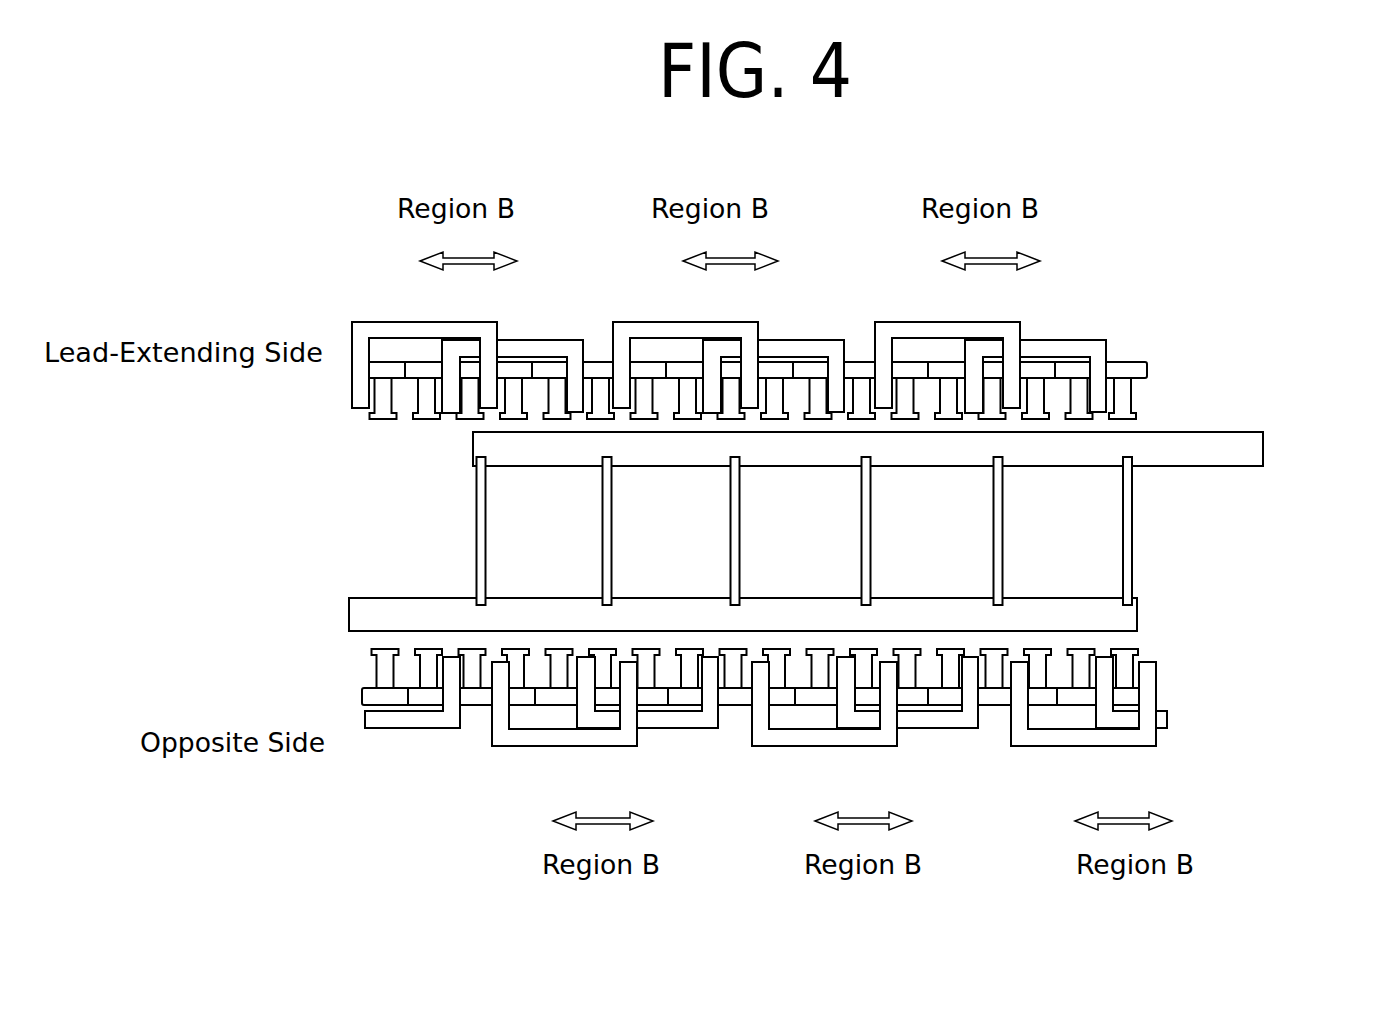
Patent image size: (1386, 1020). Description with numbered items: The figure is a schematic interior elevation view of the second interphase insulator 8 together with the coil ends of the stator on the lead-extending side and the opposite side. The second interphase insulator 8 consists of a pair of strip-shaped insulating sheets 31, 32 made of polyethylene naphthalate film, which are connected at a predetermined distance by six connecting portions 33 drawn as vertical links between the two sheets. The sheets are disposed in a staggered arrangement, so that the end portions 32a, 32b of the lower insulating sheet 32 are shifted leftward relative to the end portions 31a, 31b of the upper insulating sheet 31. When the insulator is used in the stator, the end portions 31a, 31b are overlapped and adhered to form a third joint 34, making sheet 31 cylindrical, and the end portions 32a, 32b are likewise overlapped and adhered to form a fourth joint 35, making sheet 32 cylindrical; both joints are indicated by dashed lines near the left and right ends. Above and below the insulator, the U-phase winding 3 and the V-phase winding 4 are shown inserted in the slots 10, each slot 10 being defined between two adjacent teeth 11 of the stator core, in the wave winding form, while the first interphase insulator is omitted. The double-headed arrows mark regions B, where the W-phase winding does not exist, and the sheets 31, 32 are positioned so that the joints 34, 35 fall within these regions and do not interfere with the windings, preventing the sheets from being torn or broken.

The U-phase winding 3 is at (512, 342).
The V-phase winding 4 is at (417, 332).
The second interphase insulator 8 is at (1284, 536).
The slot 10 is at (1062, 425).
The tooth 11 is at (1132, 387).
The strip-shaped insulating sheet 31 is at (1192, 448).
The end portion of insulating sheet 31a is at (473, 458).
The end portion of insulating sheet 31b is at (1263, 445).
The strip-shaped insulating sheet 32 is at (405, 673).
The end portion of insulating sheet 32a is at (349, 613).
The end portion of insulating sheet 32b is at (1135, 605).
The connecting portion 33 is at (1128, 553).
The third joint 34 is at (473, 466).
The fourth joint 35 is at (1123, 612).